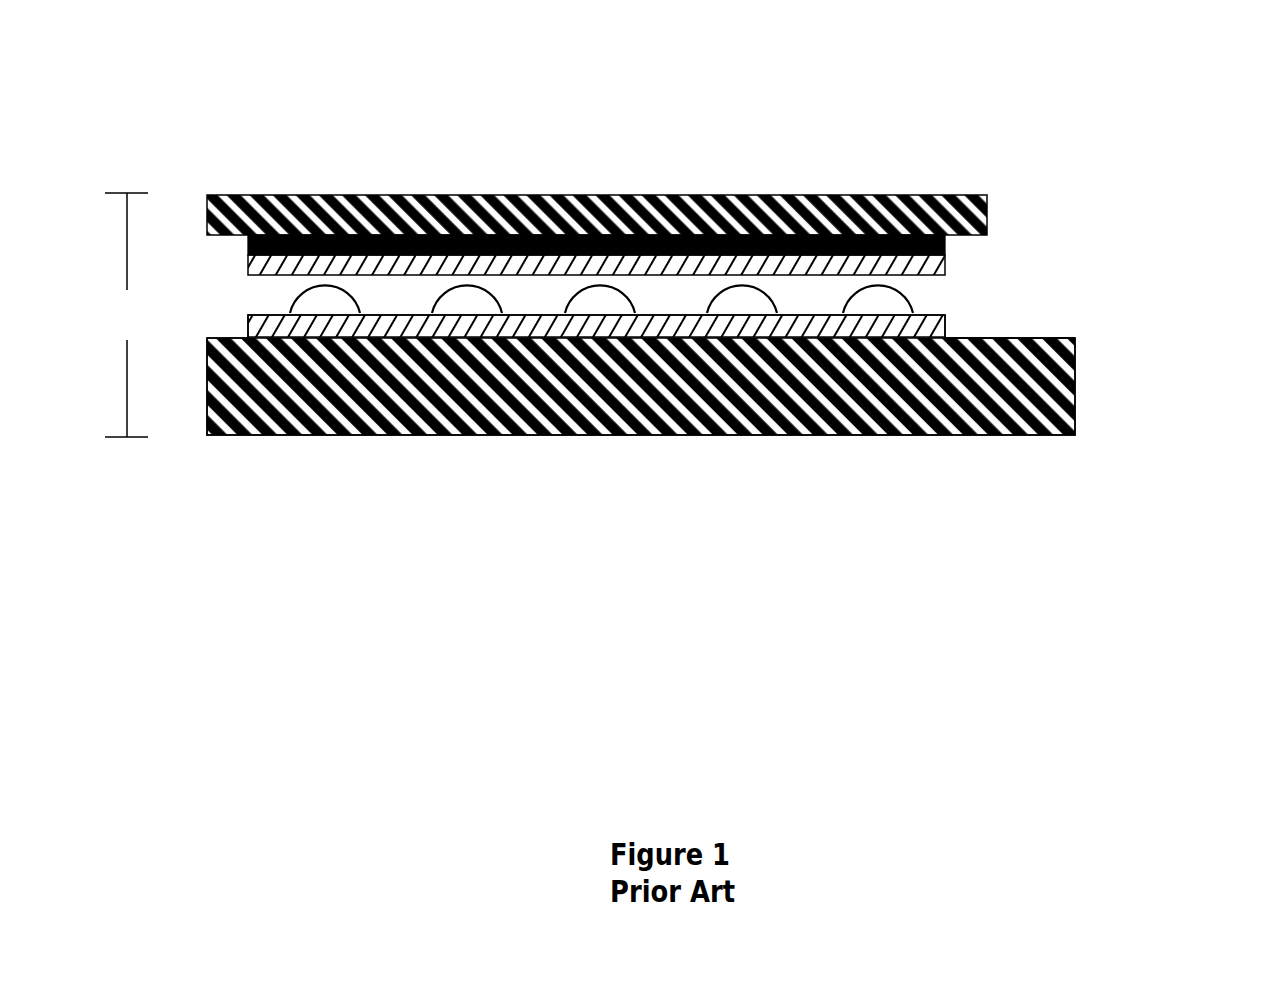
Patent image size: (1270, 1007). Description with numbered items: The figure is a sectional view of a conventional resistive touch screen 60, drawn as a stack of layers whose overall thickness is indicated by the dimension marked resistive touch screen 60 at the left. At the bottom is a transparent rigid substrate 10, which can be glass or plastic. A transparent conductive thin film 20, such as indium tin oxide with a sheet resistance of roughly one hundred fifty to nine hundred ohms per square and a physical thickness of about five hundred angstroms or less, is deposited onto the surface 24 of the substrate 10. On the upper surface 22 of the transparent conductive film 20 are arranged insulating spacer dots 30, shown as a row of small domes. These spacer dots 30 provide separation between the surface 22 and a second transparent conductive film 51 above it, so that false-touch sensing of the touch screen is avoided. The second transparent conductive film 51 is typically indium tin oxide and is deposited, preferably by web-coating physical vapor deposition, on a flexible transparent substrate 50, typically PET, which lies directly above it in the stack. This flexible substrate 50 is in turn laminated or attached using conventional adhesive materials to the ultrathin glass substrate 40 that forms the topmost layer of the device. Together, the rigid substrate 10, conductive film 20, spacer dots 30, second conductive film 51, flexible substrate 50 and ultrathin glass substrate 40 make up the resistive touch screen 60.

The transparent rigid substrate 10 is at (1055, 402).
The transparent conductive thin film 20 is at (947, 327).
The surface 22 is at (932, 325).
The surface 24 is at (1045, 335).
The insulating spacer dots 30 is at (890, 308).
The ultrathin glass substrate 40 is at (953, 210).
The flexible substrate 50 is at (946, 242).
The second transparent conductive film 51 is at (946, 264).
The resistive touch screen 60 is at (126, 315).